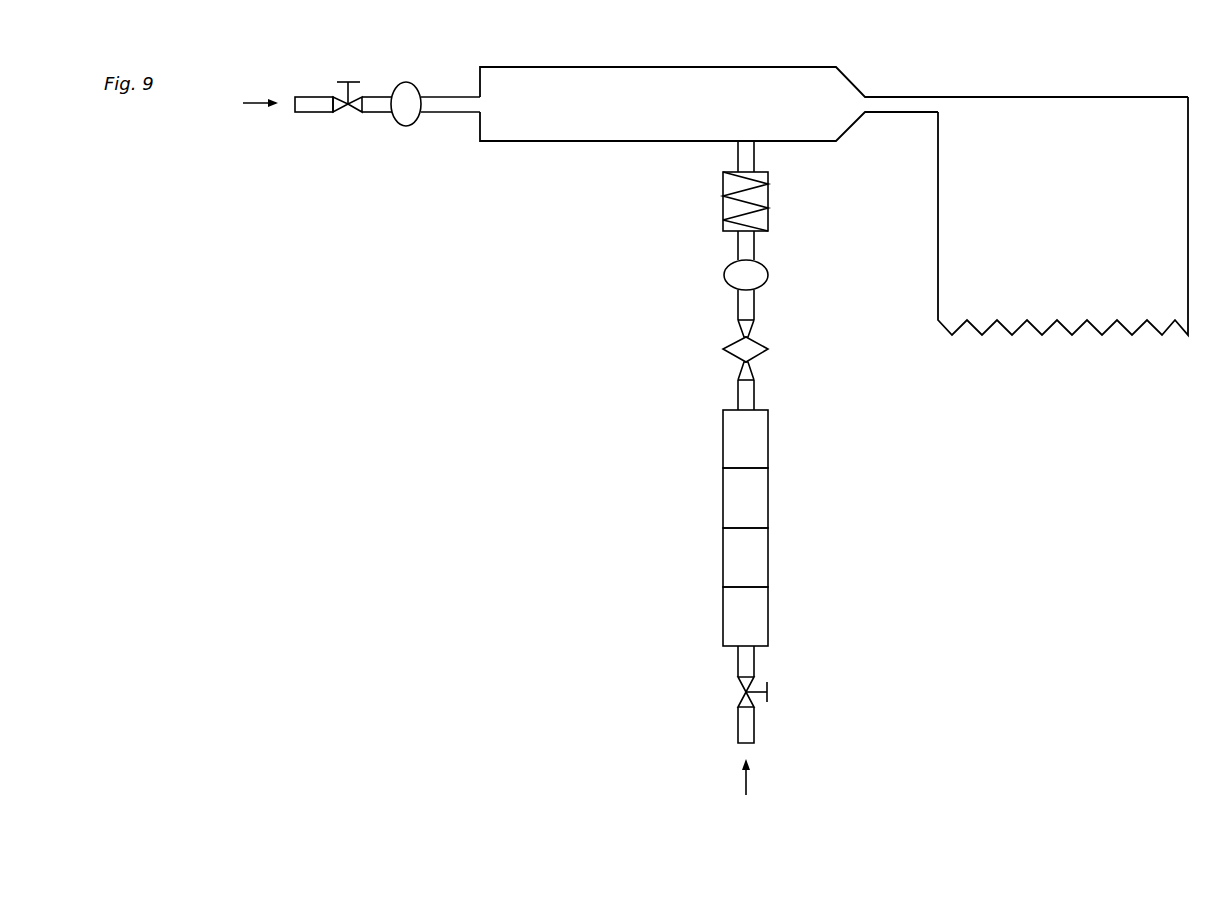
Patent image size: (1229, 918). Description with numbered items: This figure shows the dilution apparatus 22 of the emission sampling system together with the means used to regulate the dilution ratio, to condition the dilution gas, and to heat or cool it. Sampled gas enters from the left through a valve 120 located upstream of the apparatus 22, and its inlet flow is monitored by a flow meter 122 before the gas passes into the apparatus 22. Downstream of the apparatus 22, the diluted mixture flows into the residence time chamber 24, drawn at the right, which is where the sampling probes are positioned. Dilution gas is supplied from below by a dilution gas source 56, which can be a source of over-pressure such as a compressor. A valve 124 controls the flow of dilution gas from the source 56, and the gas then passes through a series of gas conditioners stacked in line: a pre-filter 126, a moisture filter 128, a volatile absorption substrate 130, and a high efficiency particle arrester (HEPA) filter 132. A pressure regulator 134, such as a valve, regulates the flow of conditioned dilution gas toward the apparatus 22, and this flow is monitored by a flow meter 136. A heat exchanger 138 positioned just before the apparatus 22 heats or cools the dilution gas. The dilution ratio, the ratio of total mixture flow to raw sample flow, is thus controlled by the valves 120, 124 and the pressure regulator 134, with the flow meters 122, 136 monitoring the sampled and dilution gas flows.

The dilution apparatus 22 is at (542, 143).
The residence time chamber 24 is at (938, 293).
The dilution gas source 56 is at (747, 780).
The valve 120 is at (357, 114).
The flow meter 122 is at (400, 125).
The valve 124 is at (740, 696).
The pre-filter 126 is at (768, 611).
The moisture filter 128 is at (768, 553).
The volatile absorption substrate 130 is at (768, 493).
The high efficiency particle arrester (HEPA) filter 132 is at (768, 432).
The pressure regulator 134 is at (727, 352).
The flow meter 136 is at (726, 271).
The heat exchanger 138 is at (723, 203).